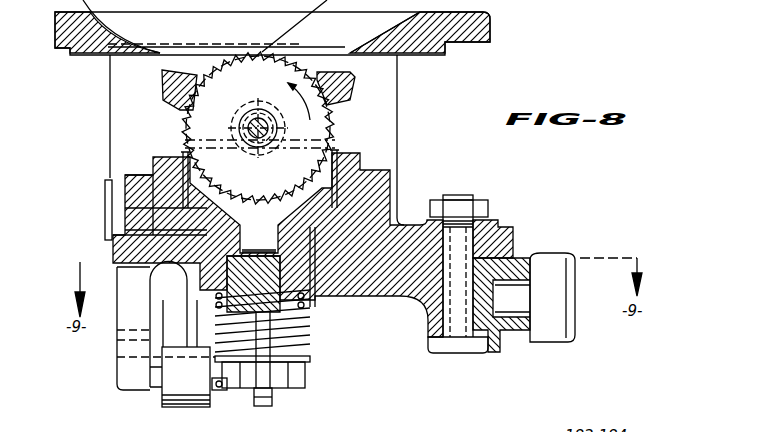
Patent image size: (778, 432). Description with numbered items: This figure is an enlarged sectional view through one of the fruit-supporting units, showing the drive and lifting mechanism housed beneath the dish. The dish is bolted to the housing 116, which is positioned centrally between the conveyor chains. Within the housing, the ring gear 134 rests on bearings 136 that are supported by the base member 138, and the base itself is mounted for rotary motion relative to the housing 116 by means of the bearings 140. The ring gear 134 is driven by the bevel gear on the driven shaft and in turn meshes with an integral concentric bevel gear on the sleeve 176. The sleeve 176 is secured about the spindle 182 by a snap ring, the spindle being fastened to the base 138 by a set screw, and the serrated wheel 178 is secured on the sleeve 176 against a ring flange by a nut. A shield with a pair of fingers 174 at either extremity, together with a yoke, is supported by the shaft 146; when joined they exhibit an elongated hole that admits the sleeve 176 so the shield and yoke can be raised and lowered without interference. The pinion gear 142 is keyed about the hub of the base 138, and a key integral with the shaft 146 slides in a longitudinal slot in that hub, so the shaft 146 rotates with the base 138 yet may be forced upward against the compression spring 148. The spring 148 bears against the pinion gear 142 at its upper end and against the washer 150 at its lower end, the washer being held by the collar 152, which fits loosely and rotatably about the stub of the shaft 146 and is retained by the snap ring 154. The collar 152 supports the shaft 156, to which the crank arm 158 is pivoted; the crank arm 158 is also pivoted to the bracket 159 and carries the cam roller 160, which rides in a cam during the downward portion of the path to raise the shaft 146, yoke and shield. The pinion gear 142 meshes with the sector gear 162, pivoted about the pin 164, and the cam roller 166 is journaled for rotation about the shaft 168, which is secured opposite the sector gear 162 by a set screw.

The housing 116 is at (398, 142).
The ring gear 134 is at (184, 152).
The bearings 136 is at (160, 219).
The base member 138 is at (135, 175).
The bearings 140 is at (167, 241).
The pinion gear 142 is at (320, 288).
The shaft 146 is at (302, 323).
The compression spring 148 is at (296, 340).
The washer 150 is at (304, 359).
The collar 152 is at (303, 386).
The snap ring 154 is at (278, 397).
The shaft 156 is at (230, 391).
The crank arm 158 is at (173, 406).
The bracket 159 is at (125, 386).
The cam roller 160 is at (118, 181).
The sector gear 162 is at (385, 287).
The pin 164 is at (447, 325).
The cam roller 166 is at (540, 335).
The shaft 168 is at (513, 287).
The fingers 174 is at (162, 76).
The sleeve 176 is at (270, 110).
The serrated wheel 178 is at (330, 117).
The spindle 182 is at (252, 126).